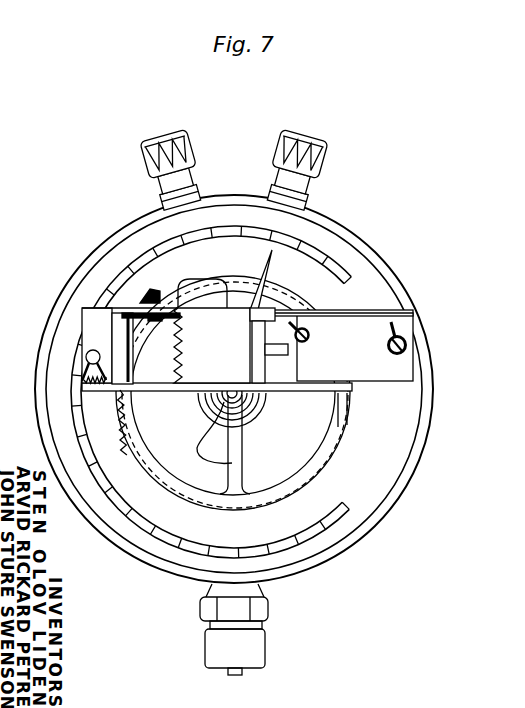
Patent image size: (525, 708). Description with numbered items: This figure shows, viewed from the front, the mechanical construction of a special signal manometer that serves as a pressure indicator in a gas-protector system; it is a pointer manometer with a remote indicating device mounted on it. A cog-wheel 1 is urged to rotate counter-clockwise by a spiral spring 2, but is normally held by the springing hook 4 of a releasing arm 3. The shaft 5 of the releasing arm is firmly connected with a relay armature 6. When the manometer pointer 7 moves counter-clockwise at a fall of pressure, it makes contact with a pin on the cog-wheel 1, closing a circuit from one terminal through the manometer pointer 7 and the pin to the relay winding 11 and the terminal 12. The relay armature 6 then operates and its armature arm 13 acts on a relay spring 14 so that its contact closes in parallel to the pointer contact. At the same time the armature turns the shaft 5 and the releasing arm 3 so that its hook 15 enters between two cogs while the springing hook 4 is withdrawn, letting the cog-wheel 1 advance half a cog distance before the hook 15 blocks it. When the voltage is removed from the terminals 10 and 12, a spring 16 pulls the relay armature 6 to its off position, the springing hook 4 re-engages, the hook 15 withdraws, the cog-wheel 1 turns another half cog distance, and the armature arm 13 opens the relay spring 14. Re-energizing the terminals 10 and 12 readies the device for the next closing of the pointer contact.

The cog-wheel 1 is at (262, 412).
The spiral spring 2 is at (356, 418).
The releasing arm 3 is at (98, 314).
The springing hook 4 is at (147, 292).
The shaft 5 is at (110, 326).
The relay armature 6 is at (92, 350).
The manometer pointer 7 is at (276, 271).
The terminal 10 is at (155, 150).
The relay winding 11 is at (98, 425).
The terminal 12 is at (305, 142).
The armature arm 13 is at (122, 312).
The relay spring 14 is at (145, 258).
The hook 15 is at (112, 402).
The spring 16 is at (84, 399).